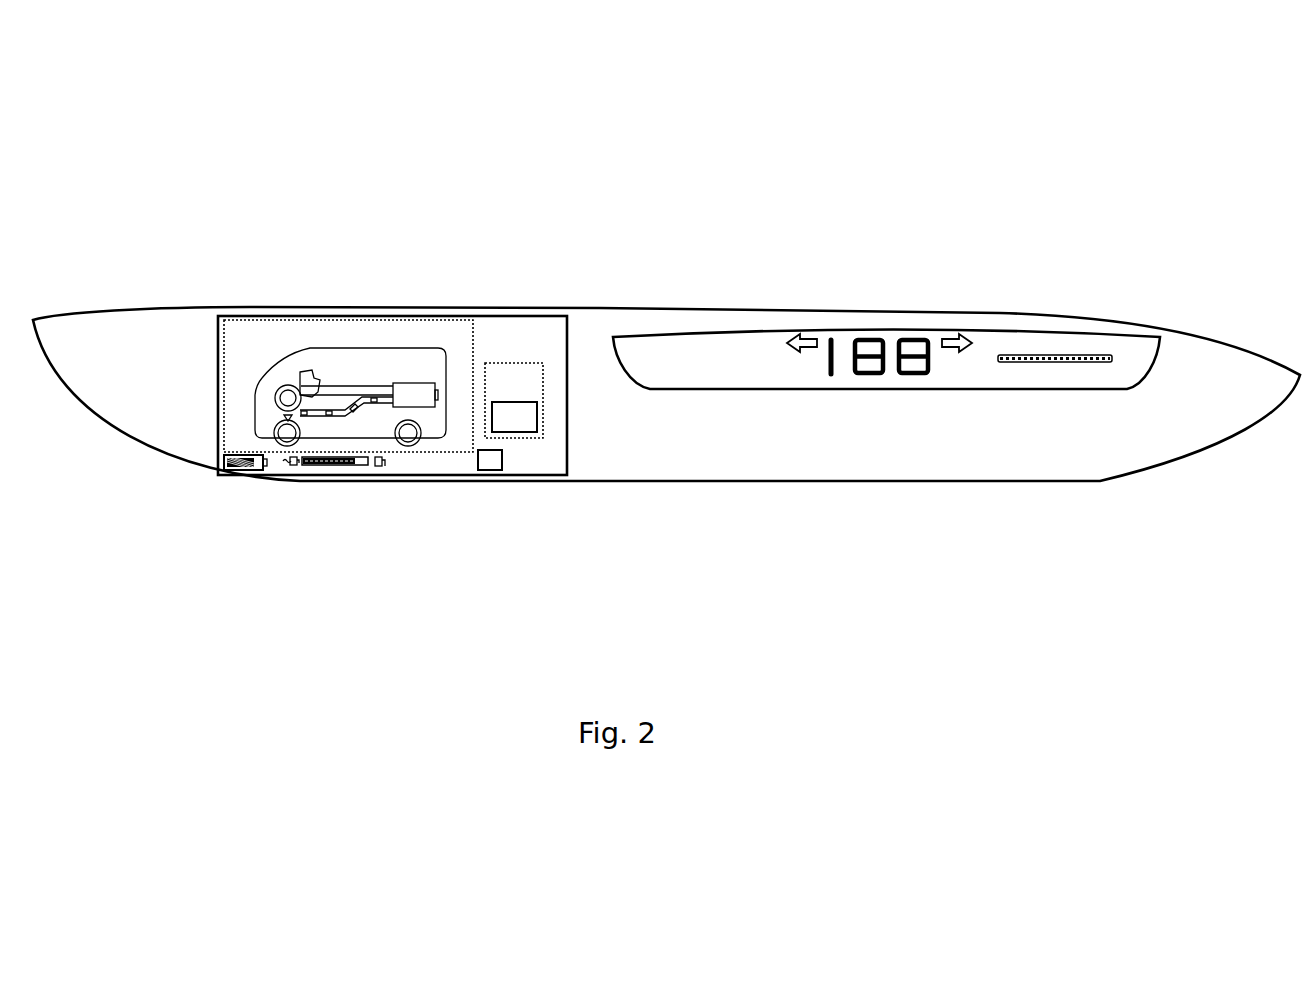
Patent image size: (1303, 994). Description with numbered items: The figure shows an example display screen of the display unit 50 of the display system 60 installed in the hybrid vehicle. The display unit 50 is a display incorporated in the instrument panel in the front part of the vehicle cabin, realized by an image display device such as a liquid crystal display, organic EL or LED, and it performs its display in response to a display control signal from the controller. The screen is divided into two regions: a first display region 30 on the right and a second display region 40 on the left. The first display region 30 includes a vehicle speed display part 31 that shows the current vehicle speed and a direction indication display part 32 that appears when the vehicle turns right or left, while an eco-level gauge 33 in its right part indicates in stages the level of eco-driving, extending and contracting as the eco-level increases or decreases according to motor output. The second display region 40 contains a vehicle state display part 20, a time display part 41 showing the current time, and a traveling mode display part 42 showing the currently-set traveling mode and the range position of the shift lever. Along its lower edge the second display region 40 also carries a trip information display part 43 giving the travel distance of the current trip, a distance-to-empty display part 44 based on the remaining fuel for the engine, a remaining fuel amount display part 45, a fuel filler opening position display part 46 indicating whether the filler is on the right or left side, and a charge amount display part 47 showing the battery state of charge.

The display system 60 is at (777, 200).
The display unit 50 is at (607, 310).
The second display region 40 is at (573, 462).
The vehicle state display part 20 is at (343, 320).
The time display part 41 is at (512, 330).
The traveling mode display part 42 is at (535, 363).
The trip information display part 43 is at (520, 470).
The distance-to-empty display part 44 is at (400, 467).
The remaining fuel amount display part 45 is at (338, 467).
The fuel filler opening position display part 46 is at (292, 467).
The charge amount display part 47 is at (240, 467).
The first display region 30 is at (885, 398).
The vehicle speed display part 31 is at (867, 335).
The direction indication display part 32 is at (805, 340).
The eco-level gauge 33 is at (1050, 353).